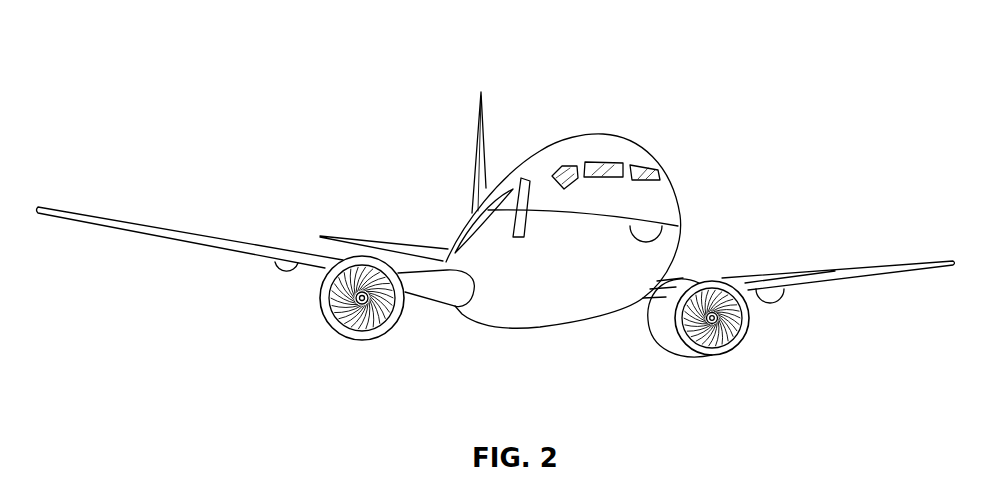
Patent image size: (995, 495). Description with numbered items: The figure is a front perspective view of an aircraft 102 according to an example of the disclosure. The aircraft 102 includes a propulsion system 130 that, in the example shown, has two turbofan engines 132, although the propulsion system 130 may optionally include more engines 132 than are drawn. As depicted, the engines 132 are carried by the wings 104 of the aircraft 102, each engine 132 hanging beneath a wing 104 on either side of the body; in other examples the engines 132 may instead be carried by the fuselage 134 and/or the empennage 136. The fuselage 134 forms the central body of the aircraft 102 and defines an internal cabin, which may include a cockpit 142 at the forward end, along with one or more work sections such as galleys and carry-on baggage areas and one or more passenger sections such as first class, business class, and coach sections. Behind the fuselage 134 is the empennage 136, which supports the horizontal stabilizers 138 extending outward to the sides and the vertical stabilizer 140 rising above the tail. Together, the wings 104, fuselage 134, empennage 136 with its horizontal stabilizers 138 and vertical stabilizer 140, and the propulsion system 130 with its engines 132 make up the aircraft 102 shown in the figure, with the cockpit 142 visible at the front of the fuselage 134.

The aircraft 102 is at (268, 44).
The wings 104 is at (162, 228).
The propulsion system 130 is at (765, 323).
The turbofan engines 132 is at (357, 342).
The fuselage 134 is at (682, 193).
The empennage 136 is at (470, 221).
The horizontal stabilizers 138 is at (353, 240).
The vertical stabilizer 140 is at (475, 128).
The cockpit 142 is at (606, 165).